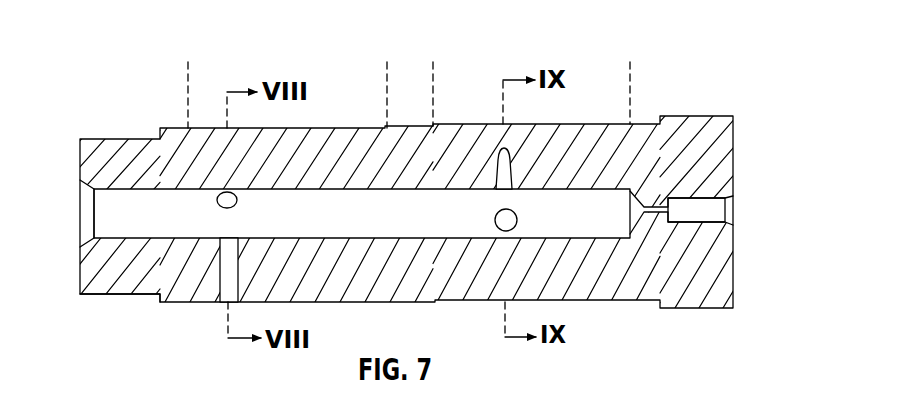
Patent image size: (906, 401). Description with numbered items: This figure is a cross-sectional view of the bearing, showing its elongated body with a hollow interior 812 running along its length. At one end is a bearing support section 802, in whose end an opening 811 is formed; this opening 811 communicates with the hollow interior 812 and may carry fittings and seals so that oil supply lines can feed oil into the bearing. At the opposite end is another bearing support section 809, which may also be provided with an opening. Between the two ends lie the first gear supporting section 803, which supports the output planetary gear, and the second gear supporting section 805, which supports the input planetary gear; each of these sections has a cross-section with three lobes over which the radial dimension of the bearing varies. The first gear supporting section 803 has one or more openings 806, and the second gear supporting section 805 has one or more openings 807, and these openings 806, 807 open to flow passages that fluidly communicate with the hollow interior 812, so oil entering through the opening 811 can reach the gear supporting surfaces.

The bearing support section 802 is at (690, 116).
The first gear supporting section 803 is at (630, 62).
The second gear supporting section 805 is at (387, 62).
The openings 806 is at (509, 175).
The openings 807 is at (227, 190).
The bearing support section 809 is at (135, 296).
The opening 811 is at (733, 209).
The hollow interior chamber 812 is at (54, 225).